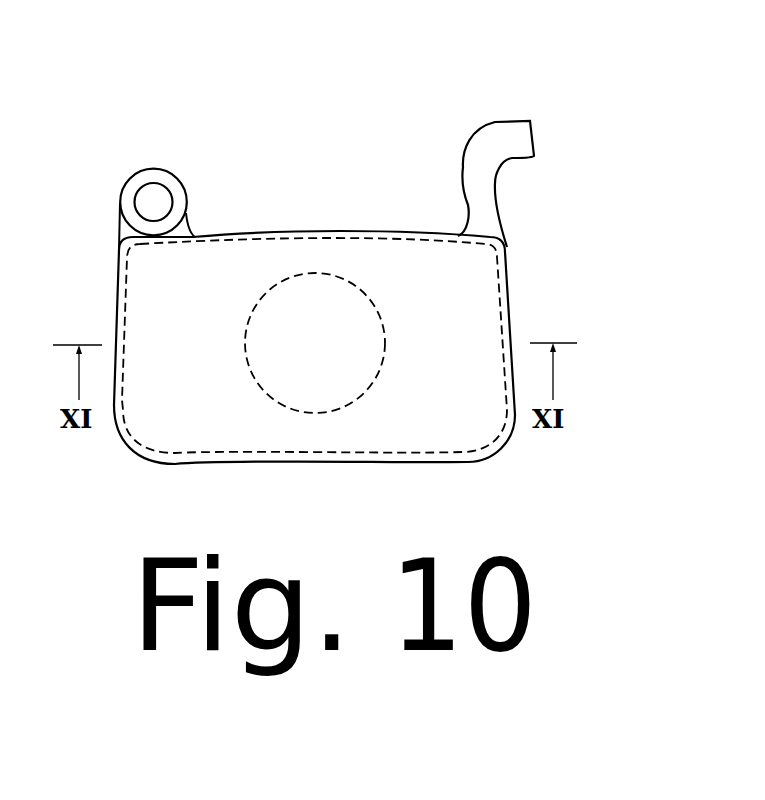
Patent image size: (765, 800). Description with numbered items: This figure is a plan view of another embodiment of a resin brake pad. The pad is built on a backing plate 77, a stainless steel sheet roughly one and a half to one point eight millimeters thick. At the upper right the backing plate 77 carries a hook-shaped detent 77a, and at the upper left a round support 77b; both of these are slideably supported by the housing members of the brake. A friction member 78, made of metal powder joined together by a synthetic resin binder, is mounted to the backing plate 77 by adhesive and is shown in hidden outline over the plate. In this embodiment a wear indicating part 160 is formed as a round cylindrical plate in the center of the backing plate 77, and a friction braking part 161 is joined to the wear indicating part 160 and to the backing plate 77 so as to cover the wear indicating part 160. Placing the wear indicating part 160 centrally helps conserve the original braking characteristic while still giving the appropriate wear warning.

The backing plate 77 is at (340, 231).
The hook-shaped detent 77a is at (501, 138).
The round support 77b is at (159, 194).
The friction member 78 is at (477, 310).
The wear indicating part 160 is at (380, 308).
The friction braking part 161 is at (463, 427).